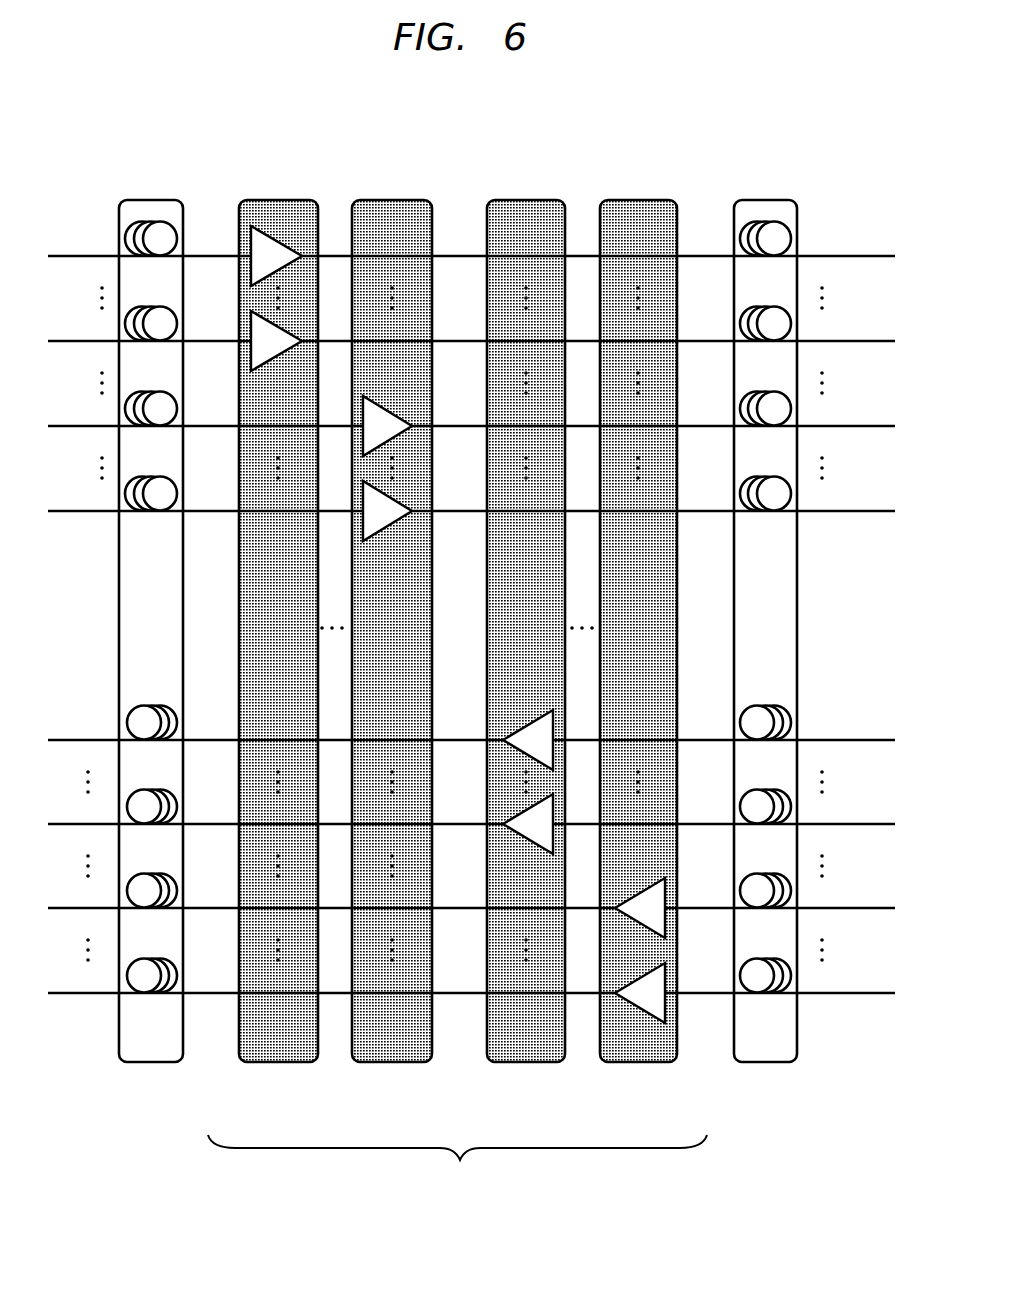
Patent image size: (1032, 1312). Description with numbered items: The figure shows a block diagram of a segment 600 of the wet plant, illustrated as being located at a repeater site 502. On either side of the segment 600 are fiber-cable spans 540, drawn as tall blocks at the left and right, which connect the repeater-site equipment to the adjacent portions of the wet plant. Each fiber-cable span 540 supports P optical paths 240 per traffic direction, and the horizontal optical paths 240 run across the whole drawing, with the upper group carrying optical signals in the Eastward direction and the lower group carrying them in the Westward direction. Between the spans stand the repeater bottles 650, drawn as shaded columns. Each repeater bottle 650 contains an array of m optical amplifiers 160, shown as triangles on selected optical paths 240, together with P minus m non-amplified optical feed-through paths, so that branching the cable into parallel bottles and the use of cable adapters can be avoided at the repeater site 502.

The segment 600 is at (476, 95).
The fiber-cable span 540 is at (458, 603).
The repeater bottle 650 is at (459, 637).
The optical amplifier 160 is at (458, 624).
The optical path 240 is at (473, 629).
The repeater site 502 is at (457, 1171).